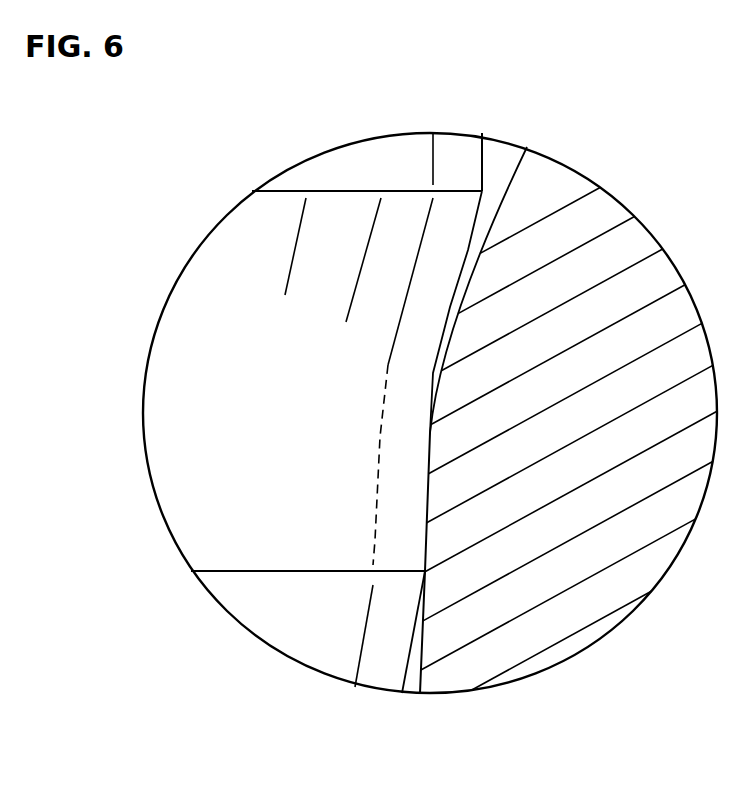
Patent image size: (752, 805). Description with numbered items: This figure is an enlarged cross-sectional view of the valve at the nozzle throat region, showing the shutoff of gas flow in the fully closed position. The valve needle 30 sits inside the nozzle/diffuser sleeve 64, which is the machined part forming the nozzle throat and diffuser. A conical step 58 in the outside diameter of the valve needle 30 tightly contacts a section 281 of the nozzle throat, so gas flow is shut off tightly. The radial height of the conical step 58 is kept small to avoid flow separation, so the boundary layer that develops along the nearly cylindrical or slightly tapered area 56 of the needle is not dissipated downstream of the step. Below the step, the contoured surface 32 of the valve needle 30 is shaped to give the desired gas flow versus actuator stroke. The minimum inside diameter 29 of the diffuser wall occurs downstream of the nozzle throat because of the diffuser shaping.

The valve needle 30 is at (289, 441).
The nearly cylindrical or slightly tapered area 56 is at (466, 163).
The conical step 58 is at (461, 228).
The section of the nozzle throat 281 is at (436, 303).
The minimum inside diameter 29 is at (423, 381).
The contoured surface 32 is at (393, 653).
The nozzle/diffuser sleeve 64 is at (571, 441).